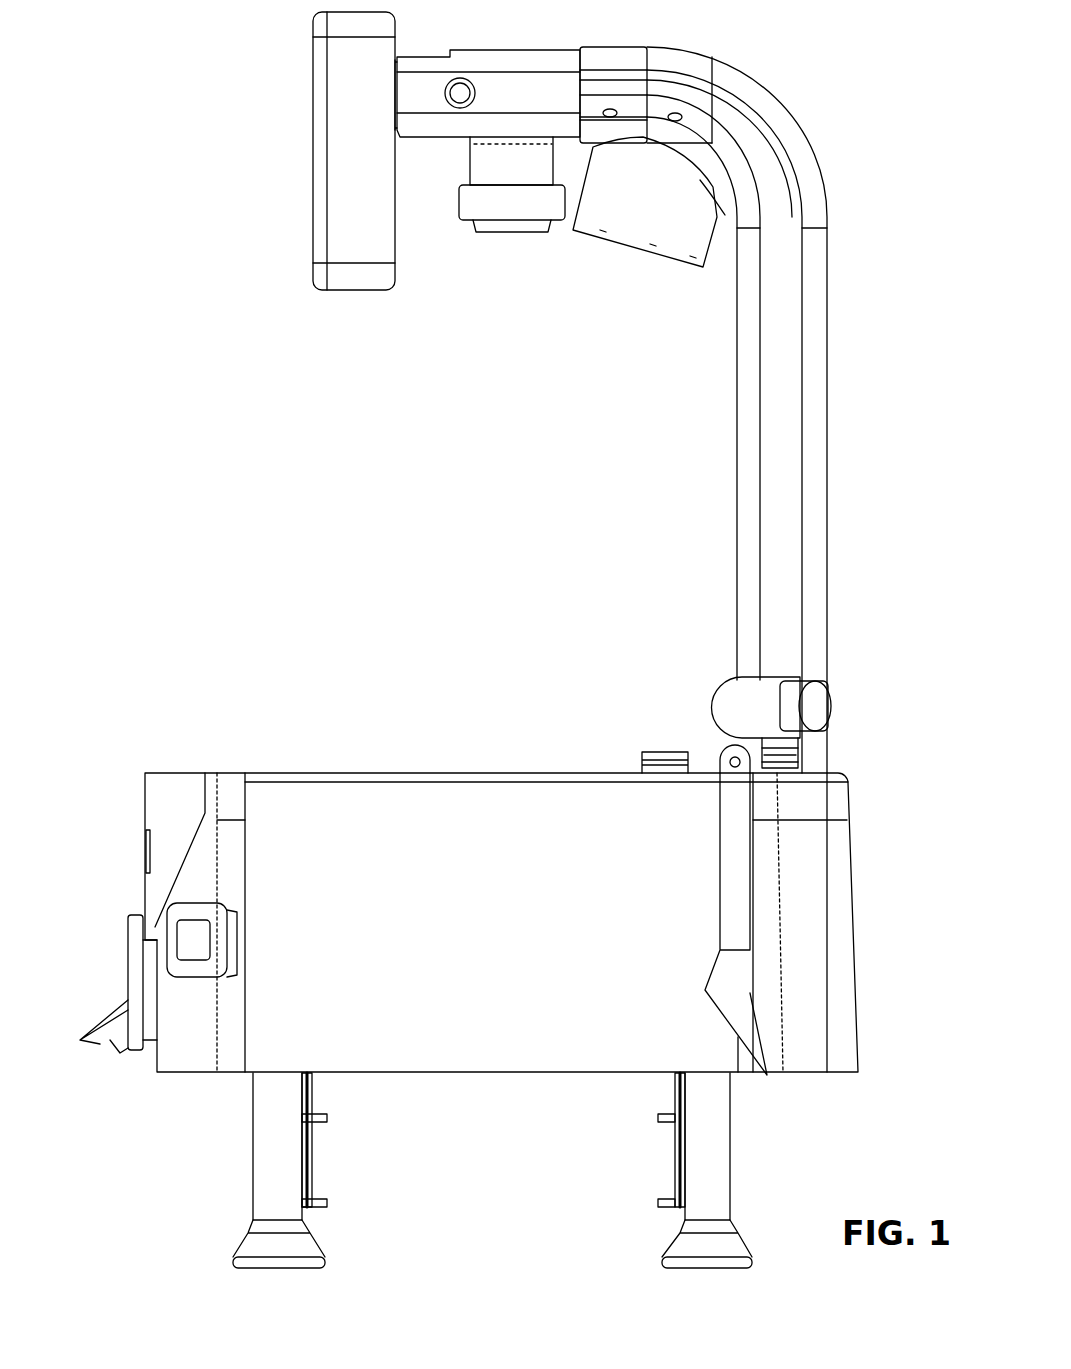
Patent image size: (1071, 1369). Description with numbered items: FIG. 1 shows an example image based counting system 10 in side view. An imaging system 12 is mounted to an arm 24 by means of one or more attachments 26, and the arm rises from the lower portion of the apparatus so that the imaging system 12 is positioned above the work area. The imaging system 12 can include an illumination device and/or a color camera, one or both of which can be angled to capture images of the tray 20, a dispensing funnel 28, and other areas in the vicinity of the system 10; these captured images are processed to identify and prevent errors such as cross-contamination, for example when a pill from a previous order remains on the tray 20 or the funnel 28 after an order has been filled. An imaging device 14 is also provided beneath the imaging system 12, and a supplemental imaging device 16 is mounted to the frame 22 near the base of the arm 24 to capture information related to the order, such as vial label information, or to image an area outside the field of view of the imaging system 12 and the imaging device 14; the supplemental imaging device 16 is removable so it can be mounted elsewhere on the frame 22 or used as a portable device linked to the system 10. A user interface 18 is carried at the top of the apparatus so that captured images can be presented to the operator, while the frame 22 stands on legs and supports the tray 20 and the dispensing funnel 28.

The system 10 is at (140, 55).
The imaging system 12 is at (649, 202).
The imaging device 14 is at (510, 232).
The supplemental imaging device 16 is at (713, 692).
The user interface 18 is at (313, 205).
The tray 20 is at (440, 768).
The frame 22 is at (253, 1103).
The arm 24 is at (827, 468).
The attachments 26 is at (665, 45).
The dispensing funnel 28 is at (140, 840).